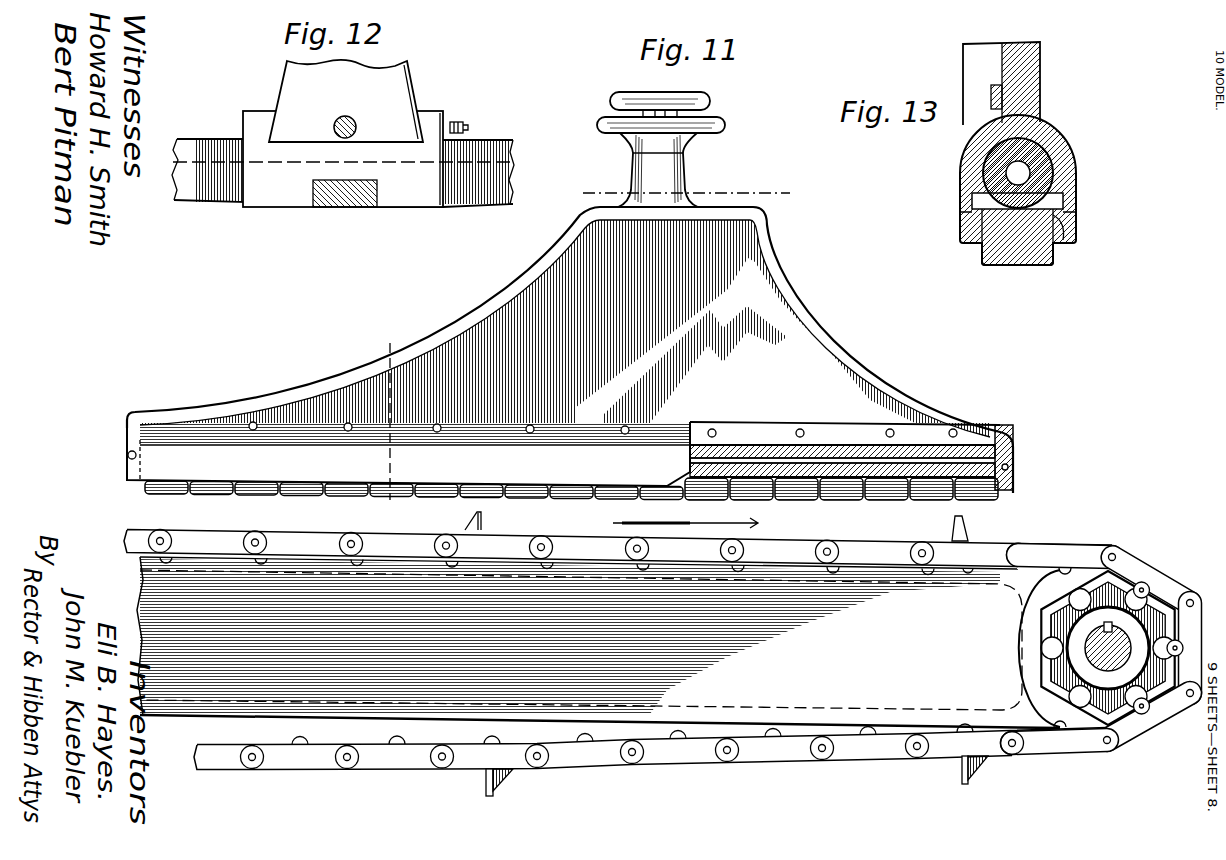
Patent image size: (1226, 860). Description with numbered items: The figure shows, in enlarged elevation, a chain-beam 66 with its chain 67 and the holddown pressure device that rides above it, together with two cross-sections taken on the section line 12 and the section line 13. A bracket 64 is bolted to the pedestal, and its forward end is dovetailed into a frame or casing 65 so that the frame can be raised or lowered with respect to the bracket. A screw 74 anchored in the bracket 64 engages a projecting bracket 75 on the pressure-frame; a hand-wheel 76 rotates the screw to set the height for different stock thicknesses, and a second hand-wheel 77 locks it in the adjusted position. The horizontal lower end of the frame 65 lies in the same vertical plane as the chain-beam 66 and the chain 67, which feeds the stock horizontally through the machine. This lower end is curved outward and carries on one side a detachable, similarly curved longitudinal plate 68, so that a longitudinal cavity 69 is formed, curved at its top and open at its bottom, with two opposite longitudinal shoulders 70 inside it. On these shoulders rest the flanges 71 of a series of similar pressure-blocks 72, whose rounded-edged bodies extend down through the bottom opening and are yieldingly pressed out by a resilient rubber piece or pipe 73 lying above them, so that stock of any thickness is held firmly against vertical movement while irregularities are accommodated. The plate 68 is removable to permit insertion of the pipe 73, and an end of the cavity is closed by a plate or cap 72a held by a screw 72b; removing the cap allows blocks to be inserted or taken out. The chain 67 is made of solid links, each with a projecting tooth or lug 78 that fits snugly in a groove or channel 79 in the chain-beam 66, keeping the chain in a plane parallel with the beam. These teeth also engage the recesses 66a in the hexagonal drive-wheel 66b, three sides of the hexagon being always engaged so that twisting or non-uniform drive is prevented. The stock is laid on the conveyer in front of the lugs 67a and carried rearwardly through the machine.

In FIG. 11, the section line 12 is at (687, 195).
In FIG. 11, the section line 13 is at (392, 422).
In FIG. 12, the bracket 64 is at (346, 101).
In FIG. 12, the frame or casing 65 is at (343, 159).
In FIG. 13, the frame or casing 65 is at (1040, 60).
In FIG. 11, the frame or casing 65 is at (570, 350).
In FIG. 11, the chain-beam 66 is at (598, 642).
In FIG. 11, the recesses 66a is at (1145, 592).
In FIG. 11, the hexagonal drive-wheel 66b is at (1160, 612).
In FIG. 11, the chain 67 is at (127, 541).
In FIG. 11, the lugs 67a is at (483, 519).
In FIG. 13, the longitudinal plate 68 is at (960, 168).
In FIG. 11, the longitudinal plate 68 is at (563, 453).
In FIG. 13, the longitudinal cavity 69 is at (1063, 200).
In FIG. 13, the longitudinal shoulders 70 is at (1076, 240).
In FIG. 13, the flanges 71 is at (972, 212).
In FIG. 11, the flanges 71 is at (1014, 478).
In FIG. 13, the pressure-blocks 72 is at (1021, 265).
In FIG. 11, the pressure-blocks 72 is at (287, 494).
In FIG. 11, the plate or cap 72a is at (1014, 447).
In FIG. 11, the screw 72b is at (128, 456).
In FIG. 13, the rubber piece or pipe 73 is at (1040, 172).
In FIG. 11, the rubber piece or pipe 73 is at (830, 447).
In FIG. 12, the screw 74 is at (356, 123).
In FIG. 12, the projecting bracket 75 is at (366, 208).
In FIG. 11, the projecting bracket 75 is at (687, 181).
In FIG. 11, the hand-wheel 76 is at (600, 126).
In FIG. 11, the second hand-wheel 77 is at (612, 99).
In FIG. 11, the tooth or lug 78 is at (307, 745).
In FIG. 11, the groove or channel 79 is at (912, 580).